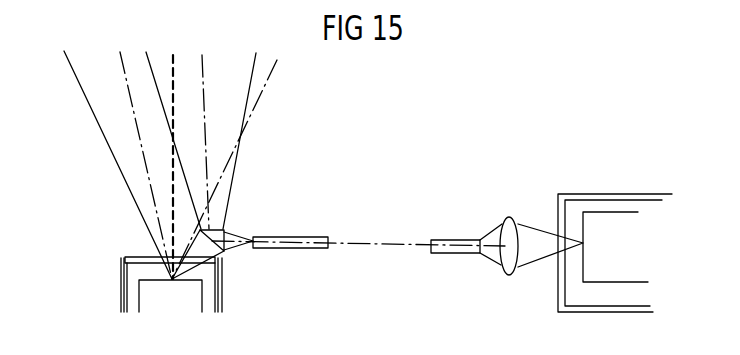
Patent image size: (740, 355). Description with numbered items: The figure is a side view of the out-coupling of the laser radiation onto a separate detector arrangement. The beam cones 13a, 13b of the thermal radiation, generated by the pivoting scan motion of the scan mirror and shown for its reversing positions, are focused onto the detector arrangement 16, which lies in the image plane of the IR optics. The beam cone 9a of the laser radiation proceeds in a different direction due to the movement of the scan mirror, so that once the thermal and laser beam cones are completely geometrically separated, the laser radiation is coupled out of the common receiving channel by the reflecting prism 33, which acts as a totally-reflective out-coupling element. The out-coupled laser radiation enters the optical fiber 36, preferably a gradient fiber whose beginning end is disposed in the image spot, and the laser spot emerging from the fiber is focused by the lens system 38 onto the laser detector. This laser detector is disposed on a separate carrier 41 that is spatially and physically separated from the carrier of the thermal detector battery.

The beam cone of the thermal radiation 13a is at (94, 116).
The beam cone of the thermal radiation 13b is at (258, 104).
The beam cone of the laser radiation 9a is at (232, 175).
The reflecting prism 33 is at (227, 230).
The optical fiber 36 is at (298, 249).
The lens system 38 is at (509, 273).
The separate carrier 41 is at (546, 211).
The detector arrangement 16 is at (108, 274).